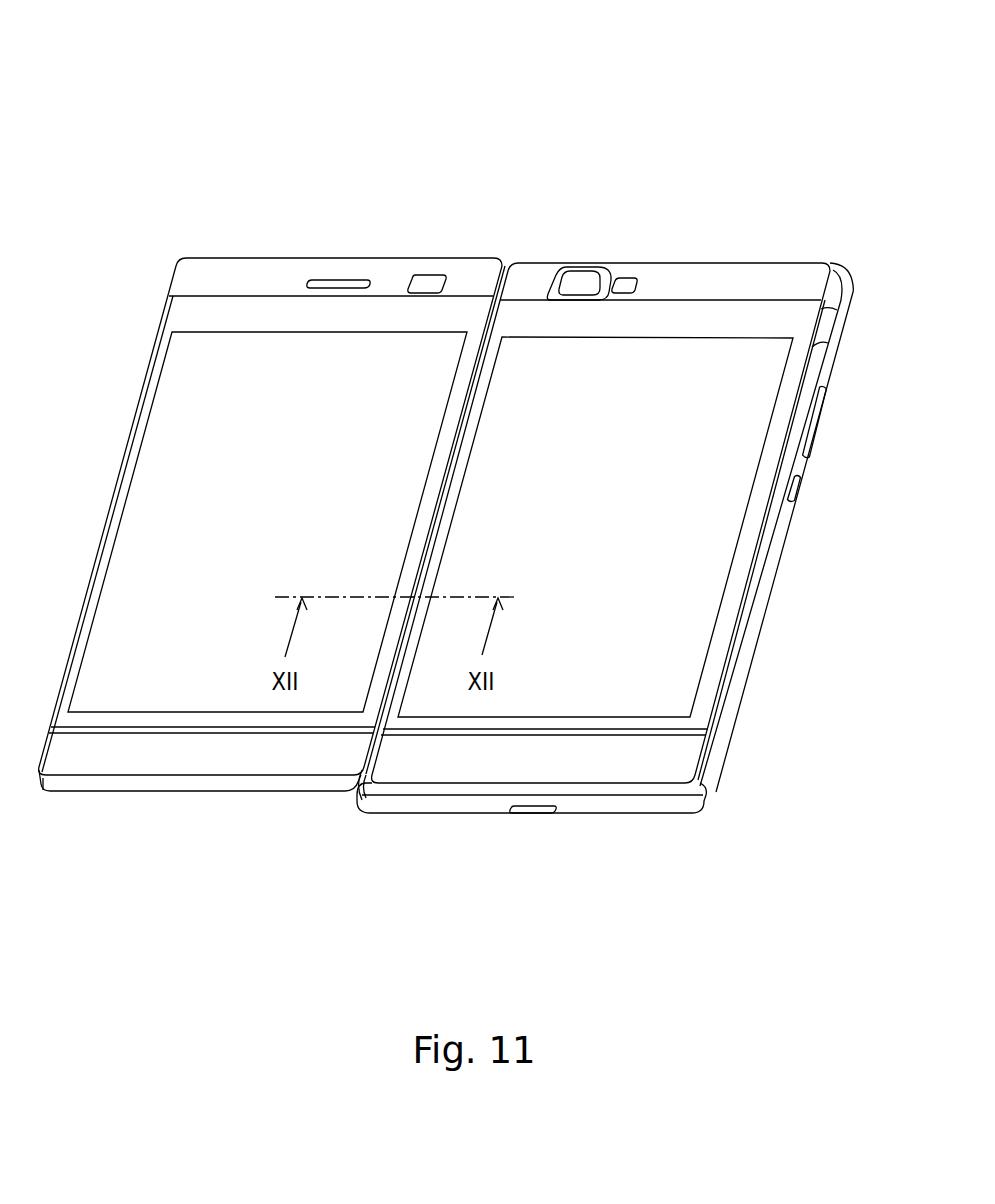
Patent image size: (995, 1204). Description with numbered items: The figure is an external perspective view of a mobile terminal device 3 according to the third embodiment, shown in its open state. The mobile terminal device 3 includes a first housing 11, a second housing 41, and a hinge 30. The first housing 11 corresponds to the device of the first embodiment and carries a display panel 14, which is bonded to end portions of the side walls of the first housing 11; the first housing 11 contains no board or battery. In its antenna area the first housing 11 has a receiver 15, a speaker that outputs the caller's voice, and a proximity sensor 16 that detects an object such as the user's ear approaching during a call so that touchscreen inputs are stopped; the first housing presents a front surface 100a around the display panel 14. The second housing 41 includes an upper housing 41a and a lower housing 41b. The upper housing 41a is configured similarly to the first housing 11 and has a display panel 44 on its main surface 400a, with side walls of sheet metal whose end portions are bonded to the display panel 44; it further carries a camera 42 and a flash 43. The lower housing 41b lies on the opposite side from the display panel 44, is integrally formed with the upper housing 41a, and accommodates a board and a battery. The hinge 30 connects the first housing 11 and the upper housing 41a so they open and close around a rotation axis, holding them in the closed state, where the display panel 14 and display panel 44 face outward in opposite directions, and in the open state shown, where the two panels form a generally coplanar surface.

The mobile terminal device 3 is at (511, 110).
The first housing 11 is at (359, 125).
The second housing 41 is at (711, 126).
The front surface of first housing 100a is at (215, 268).
The main surface 400a is at (803, 270).
The display panel 14 is at (192, 318).
The display panel 44 is at (782, 325).
The receiver 15 is at (362, 283).
The proximity sensor 16 is at (434, 281).
The camera 42 is at (582, 281).
The flash 43 is at (633, 281).
The hinge 30 is at (355, 812).
The upper housing 41a is at (652, 792).
The lower housing 41b is at (573, 808).